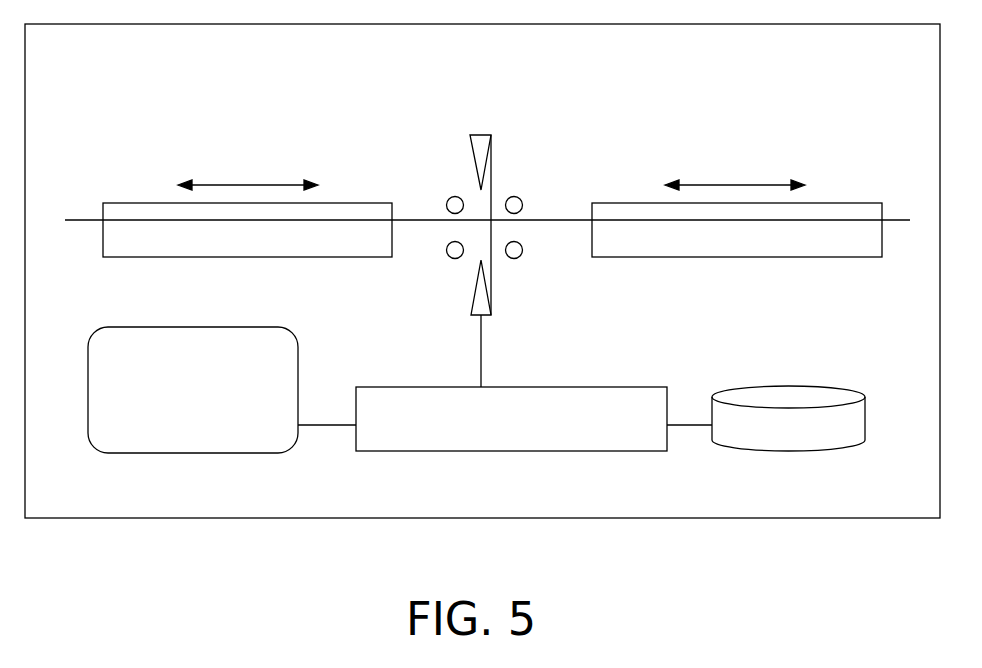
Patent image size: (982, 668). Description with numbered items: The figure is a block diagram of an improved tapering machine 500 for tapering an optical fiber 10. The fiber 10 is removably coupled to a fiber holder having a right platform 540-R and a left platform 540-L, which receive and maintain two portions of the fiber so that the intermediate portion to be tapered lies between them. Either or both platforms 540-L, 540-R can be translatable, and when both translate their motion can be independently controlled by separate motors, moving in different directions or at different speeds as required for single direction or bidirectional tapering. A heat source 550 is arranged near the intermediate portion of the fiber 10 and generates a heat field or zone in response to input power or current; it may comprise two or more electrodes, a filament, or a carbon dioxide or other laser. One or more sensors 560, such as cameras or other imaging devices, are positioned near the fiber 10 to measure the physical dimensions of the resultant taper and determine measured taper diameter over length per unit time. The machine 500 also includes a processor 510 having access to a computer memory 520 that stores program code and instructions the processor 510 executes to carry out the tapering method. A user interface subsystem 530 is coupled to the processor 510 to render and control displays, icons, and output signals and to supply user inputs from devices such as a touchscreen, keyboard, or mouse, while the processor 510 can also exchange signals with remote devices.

The tapering machine 500 is at (80, 52).
The fiber 10 is at (430, 217).
The heat source 550 is at (520, 150).
The sensors 560 is at (430, 256).
The left platform 540-L is at (170, 250).
The right platform 540-R is at (807, 248).
The user interface subsystem 530 is at (150, 439).
The processor 510 is at (490, 440).
The computer memory 520 is at (765, 440).